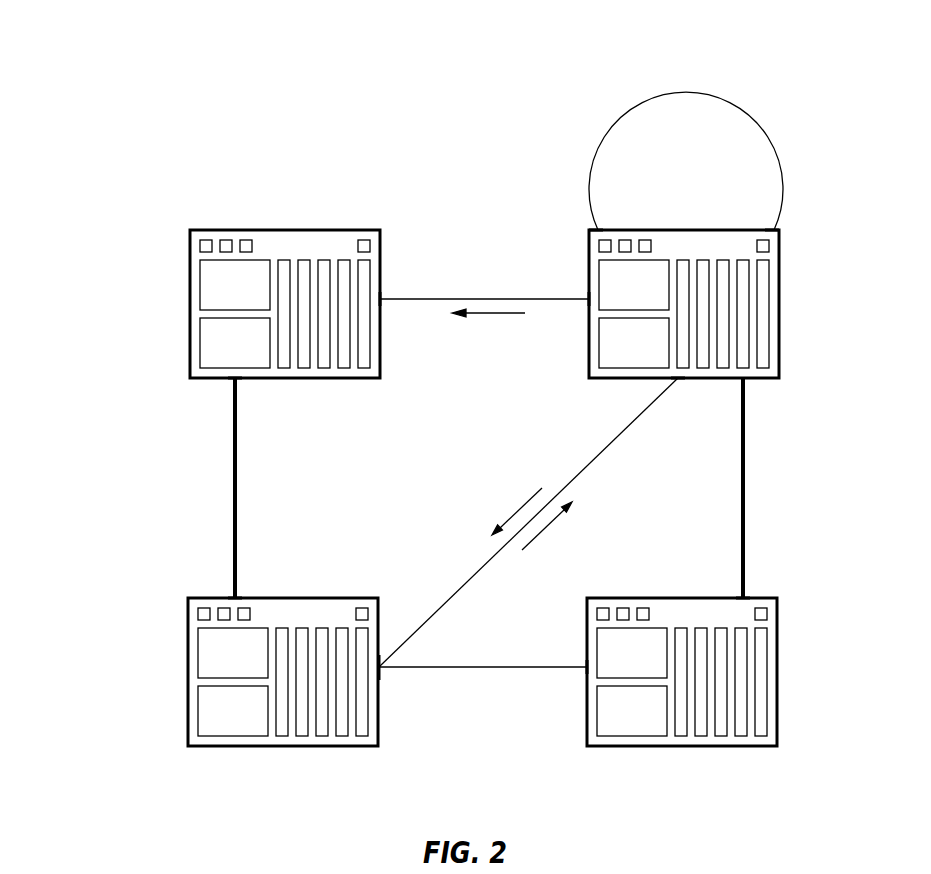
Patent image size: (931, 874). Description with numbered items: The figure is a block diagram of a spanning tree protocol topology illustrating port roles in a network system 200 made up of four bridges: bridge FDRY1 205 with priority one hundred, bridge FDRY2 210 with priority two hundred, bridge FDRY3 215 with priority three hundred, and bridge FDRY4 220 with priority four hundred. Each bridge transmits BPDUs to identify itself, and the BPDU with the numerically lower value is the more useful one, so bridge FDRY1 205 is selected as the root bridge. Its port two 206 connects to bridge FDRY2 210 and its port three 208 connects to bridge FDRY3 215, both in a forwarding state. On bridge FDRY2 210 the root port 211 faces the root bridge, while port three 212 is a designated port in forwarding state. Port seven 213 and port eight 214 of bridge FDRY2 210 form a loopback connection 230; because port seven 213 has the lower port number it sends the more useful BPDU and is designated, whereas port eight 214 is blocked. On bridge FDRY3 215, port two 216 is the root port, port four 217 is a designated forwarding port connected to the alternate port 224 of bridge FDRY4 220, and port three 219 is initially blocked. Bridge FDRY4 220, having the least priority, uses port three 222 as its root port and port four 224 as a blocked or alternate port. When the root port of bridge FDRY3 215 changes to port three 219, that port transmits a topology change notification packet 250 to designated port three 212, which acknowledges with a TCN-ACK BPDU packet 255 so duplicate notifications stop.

The network system 200 is at (97, 210).
The bridge FDRY1 205 is at (188, 305).
The bridge FDRY2 210 is at (781, 302).
The bridge FDRY3 215 is at (187, 672).
The bridge FDRY4 220 is at (779, 670).
The loopback connection 230 is at (683, 92).
The port 2 of bridge FDRY1 206 is at (383, 301).
The port 3 of bridge FDRY1 208 is at (228, 380).
The root port of bridge FDRY2 211 is at (587, 301).
The port 3 of bridge FDRY2 212 is at (680, 380).
The port 7 of bridge FDRY2 213 is at (595, 228).
The port 8 of bridge FDRY2 214 is at (782, 228).
The port 2 of bridge FDRY3 216 is at (230, 597).
The port 4 of bridge FDRY3 217 is at (390, 668).
The port 3 of bridge FDRY3 219 is at (393, 656).
The port 3 of bridge FDRY4 222 is at (748, 597).
The port 4 of bridge FDRY4 224 is at (585, 665).
The topology change notification packet 250 is at (495, 314).
The TCN-ACK BPDU packet 255 is at (518, 510).